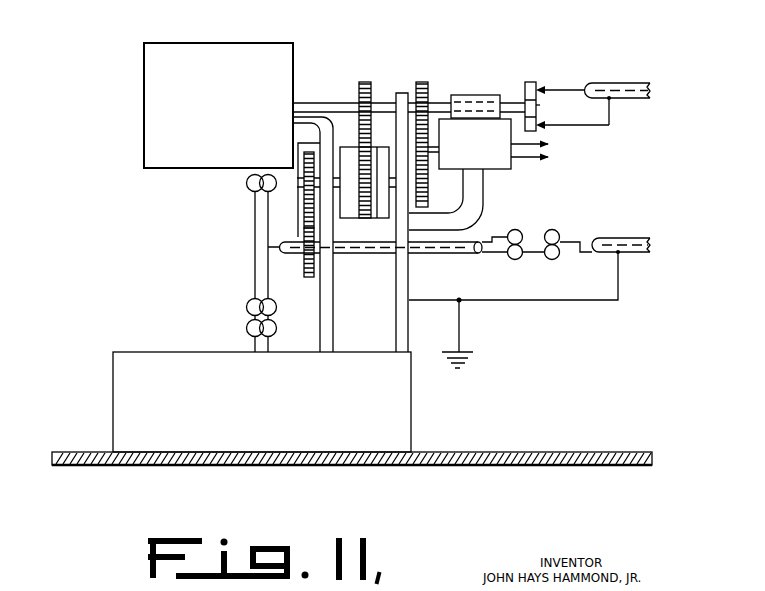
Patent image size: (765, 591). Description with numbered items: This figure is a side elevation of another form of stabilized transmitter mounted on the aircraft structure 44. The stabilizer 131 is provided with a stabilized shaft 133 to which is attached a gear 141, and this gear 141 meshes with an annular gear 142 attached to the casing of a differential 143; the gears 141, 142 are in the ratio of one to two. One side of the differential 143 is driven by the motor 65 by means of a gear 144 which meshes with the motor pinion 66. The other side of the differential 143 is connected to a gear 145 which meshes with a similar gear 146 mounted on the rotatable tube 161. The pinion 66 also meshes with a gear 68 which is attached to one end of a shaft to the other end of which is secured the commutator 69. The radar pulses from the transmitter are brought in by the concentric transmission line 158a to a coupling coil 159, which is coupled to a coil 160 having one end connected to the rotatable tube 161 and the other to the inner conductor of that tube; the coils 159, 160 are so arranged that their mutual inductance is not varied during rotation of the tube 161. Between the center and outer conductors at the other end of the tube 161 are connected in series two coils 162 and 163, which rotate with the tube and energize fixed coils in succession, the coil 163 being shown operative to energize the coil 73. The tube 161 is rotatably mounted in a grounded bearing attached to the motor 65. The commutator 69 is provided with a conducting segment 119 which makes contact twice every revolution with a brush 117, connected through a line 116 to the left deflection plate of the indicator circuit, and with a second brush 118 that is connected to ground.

The stabilizer 131 is at (144, 124).
The stabilized shaft 133 is at (323, 101).
The gear 141 is at (364, 82).
The annular gear 142 is at (361, 141).
The differential 143 is at (379, 150).
The gear 68 is at (422, 83).
The gear 145 is at (301, 179).
The gear 146 is at (303, 236).
The coil 162 is at (246, 187).
The coil 163 is at (247, 308).
The coil 73 is at (246, 327).
The rotatable tube 161 is at (347, 254).
The motor 65 is at (498, 170).
The pinion 66 is at (428, 158).
The gear 144 is at (452, 207).
The commutator 69 is at (529, 82).
The brush 117 is at (541, 88).
The brush 118 is at (552, 127).
The conducting segment 119 is at (538, 105).
The line 116 is at (604, 83).
The coil 160 is at (513, 260).
The coupling coil 159 is at (554, 260).
The concentric transmission line 158a is at (632, 219).
The aircraft structure 44 is at (538, 452).